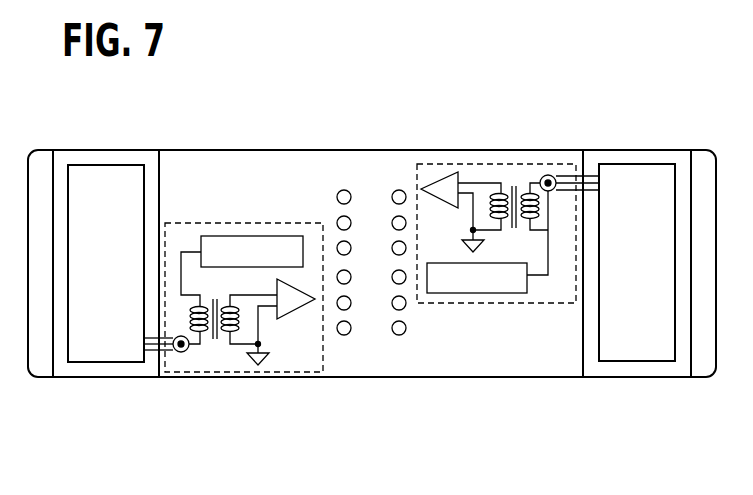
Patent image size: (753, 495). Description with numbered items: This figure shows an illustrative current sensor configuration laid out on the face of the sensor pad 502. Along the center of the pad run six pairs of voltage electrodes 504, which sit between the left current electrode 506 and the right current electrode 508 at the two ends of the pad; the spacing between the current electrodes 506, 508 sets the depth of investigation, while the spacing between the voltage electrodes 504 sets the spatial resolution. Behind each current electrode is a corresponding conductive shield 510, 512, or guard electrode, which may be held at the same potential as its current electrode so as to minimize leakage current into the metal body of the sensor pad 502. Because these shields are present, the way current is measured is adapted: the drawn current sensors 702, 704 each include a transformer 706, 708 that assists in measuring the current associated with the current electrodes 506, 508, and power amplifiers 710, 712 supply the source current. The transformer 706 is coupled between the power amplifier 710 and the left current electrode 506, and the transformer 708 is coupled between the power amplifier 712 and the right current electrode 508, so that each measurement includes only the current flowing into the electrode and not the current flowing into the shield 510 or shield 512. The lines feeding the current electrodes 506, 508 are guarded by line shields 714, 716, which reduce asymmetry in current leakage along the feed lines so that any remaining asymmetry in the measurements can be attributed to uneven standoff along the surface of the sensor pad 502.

The sensor pad 502 is at (250, 150).
The voltage electrodes 504 is at (338, 190).
The left current electrode 506 is at (88, 165).
The right current electrode 508 is at (663, 362).
The conductive shield 510 is at (147, 162).
The conductive shield 512 is at (600, 368).
The current sensor 702 is at (322, 372).
The current sensor 704 is at (475, 162).
The transformer 706 is at (215, 338).
The transformer 708 is at (514, 186).
The power amplifier 710 is at (267, 236).
The power amplifier 712 is at (478, 293).
The line shield 714 is at (176, 351).
The line shield 716 is at (553, 176).